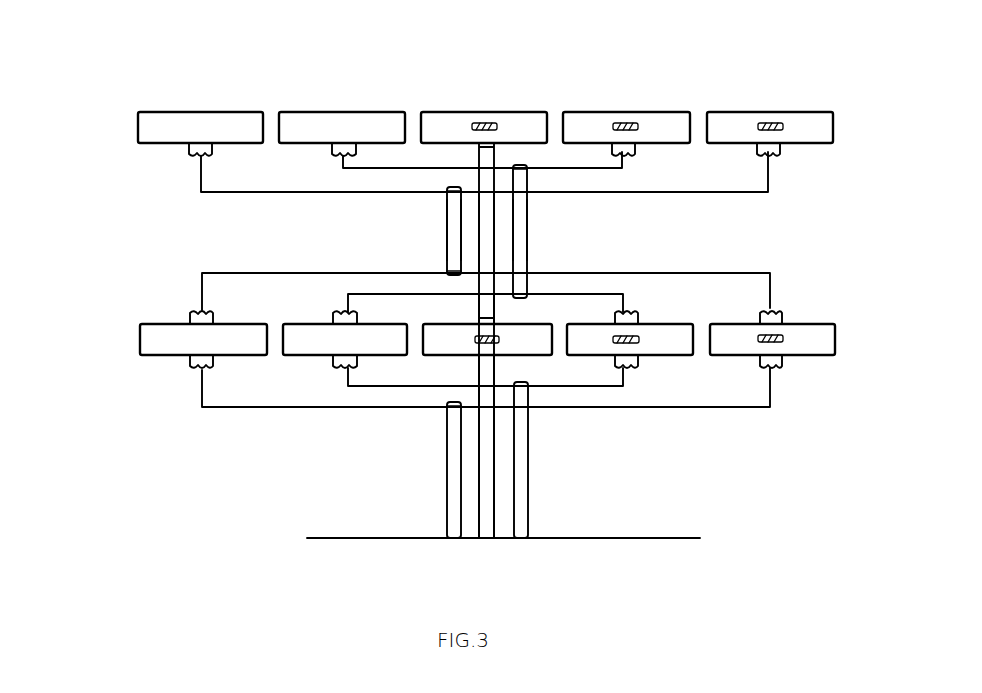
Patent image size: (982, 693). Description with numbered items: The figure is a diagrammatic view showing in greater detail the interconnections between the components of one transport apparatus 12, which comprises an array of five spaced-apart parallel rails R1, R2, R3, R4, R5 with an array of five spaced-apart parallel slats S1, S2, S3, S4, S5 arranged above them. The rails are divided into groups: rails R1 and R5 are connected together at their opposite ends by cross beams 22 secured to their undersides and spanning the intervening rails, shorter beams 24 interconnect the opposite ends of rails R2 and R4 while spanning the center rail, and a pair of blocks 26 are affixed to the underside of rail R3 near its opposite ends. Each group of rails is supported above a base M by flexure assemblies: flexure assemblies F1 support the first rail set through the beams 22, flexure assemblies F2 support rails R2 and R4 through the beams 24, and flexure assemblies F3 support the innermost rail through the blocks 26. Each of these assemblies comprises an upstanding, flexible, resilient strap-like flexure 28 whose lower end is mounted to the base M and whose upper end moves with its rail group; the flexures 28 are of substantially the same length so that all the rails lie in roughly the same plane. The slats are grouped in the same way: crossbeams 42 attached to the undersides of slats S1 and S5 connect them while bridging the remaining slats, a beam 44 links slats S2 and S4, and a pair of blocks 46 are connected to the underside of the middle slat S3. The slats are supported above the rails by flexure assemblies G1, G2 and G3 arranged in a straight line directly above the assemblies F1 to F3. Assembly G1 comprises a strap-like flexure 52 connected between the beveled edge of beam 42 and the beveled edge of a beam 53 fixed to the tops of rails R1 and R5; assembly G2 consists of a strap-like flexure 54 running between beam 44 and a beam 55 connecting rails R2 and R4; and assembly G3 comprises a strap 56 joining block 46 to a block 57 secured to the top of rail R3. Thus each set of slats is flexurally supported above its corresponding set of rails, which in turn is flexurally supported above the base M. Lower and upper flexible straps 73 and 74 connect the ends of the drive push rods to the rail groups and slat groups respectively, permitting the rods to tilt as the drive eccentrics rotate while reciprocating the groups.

The transport apparatus 12 is at (118, 236).
The cross beams 22 is at (257, 409).
The shorter beams 24 is at (357, 388).
The blocks 26 is at (497, 358).
The flexure 28 is at (486, 460).
The crossbeams 42 is at (288, 193).
The beam 44 is at (367, 172).
The blocks 46 is at (487, 148).
The strap-like flexure 52 is at (452, 240).
The beam 53 is at (243, 254).
The strap-like flexure 54 is at (521, 266).
The beam 55 is at (348, 294).
The strap 56 is at (489, 211).
The block 57 is at (479, 318).
The lower flexible strap 73 is at (632, 338).
The upper flexible strap 74 is at (483, 122).
The slat S1 is at (231, 118).
The slat S2 is at (358, 118).
The slat S3 is at (512, 120).
The slat S4 is at (657, 120).
The slat S5 is at (790, 118).
The rail R1 is at (245, 347).
The rail R2 is at (312, 347).
The rail R3 is at (440, 347).
The rail R4 is at (668, 343).
The rail R5 is at (737, 343).
The flexure assembly G1 is at (446, 220).
The flexure assembly G2 is at (529, 250).
The flexure assembly G3 is at (498, 233).
The flexure assembly F1 is at (446, 470).
The flexure assembly F2 is at (531, 475).
The flexure assembly F3 is at (496, 497).
The base M is at (340, 536).